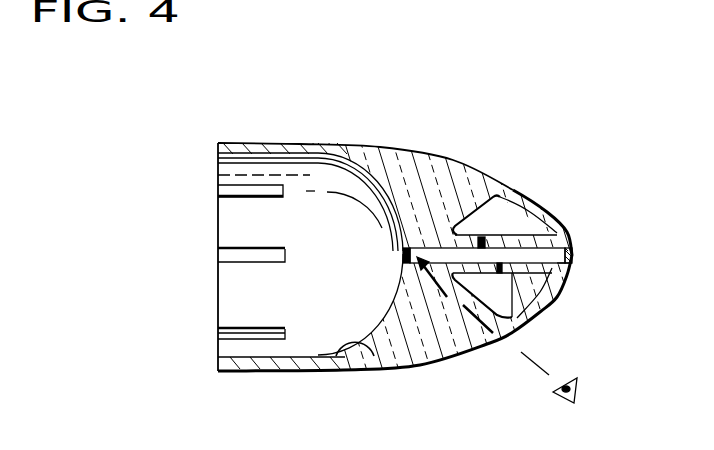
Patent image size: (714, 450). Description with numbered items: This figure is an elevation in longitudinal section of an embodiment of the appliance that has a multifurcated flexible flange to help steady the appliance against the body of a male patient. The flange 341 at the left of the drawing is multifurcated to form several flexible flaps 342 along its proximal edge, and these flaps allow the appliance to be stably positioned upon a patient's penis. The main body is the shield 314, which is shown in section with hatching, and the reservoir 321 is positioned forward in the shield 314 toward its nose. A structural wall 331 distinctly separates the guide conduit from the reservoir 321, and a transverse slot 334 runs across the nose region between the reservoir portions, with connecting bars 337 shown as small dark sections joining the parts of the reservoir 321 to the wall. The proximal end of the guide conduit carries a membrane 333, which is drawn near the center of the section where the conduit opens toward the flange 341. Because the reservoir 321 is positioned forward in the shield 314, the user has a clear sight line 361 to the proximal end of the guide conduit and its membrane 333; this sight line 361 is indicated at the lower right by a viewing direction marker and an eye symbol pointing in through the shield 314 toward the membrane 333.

The shield 314 is at (466, 118).
The reservoir 321 is at (505, 212).
The structural wall 331 is at (572, 268).
The membrane 333 is at (400, 260).
The transverse slot 334 is at (572, 257).
The connecting bars 337 is at (490, 237).
The flange 341 is at (352, 404).
The flexible flaps 342 is at (227, 288).
The sight line 361 is at (527, 357).